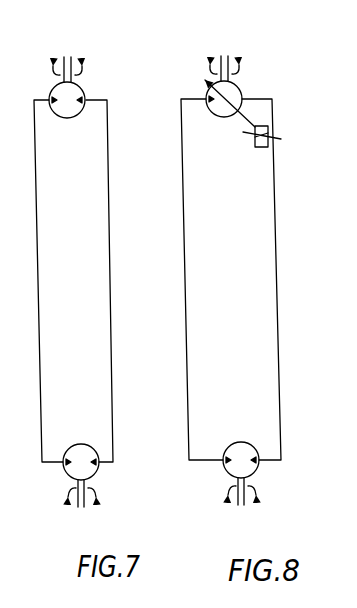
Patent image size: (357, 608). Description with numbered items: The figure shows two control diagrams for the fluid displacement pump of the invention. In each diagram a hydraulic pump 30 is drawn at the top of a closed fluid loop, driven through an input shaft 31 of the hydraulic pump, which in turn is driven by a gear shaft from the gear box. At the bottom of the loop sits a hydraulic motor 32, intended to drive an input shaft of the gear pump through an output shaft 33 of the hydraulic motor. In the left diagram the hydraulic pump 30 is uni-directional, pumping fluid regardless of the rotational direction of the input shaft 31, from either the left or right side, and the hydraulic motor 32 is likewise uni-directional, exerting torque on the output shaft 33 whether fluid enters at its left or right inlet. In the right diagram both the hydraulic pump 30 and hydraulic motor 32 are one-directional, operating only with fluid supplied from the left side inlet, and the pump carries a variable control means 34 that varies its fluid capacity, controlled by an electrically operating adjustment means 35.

In FIG. 7, the hydraulic pump 30 is at (88, 84).
In FIG. 8, the hydraulic pump 30 is at (244, 83).
In FIG. 7, the input shaft of the hydraulic pump 31 is at (63, 60).
In FIG. 8, the input shaft of the hydraulic pump 31 is at (222, 62).
In FIG. 7, the hydraulic motor 32 is at (99, 477).
In FIG. 8, the hydraulic motor 32 is at (260, 475).
In FIG. 7, the output shaft of the hydraulic motor 33 is at (77, 503).
In FIG. 8, the output shaft of the hydraulic motor 33 is at (237, 499).
In FIG. 8, the variable control means 34 is at (189, 80).
In FIG. 8, the electrically operating adjustment means 35 is at (278, 127).